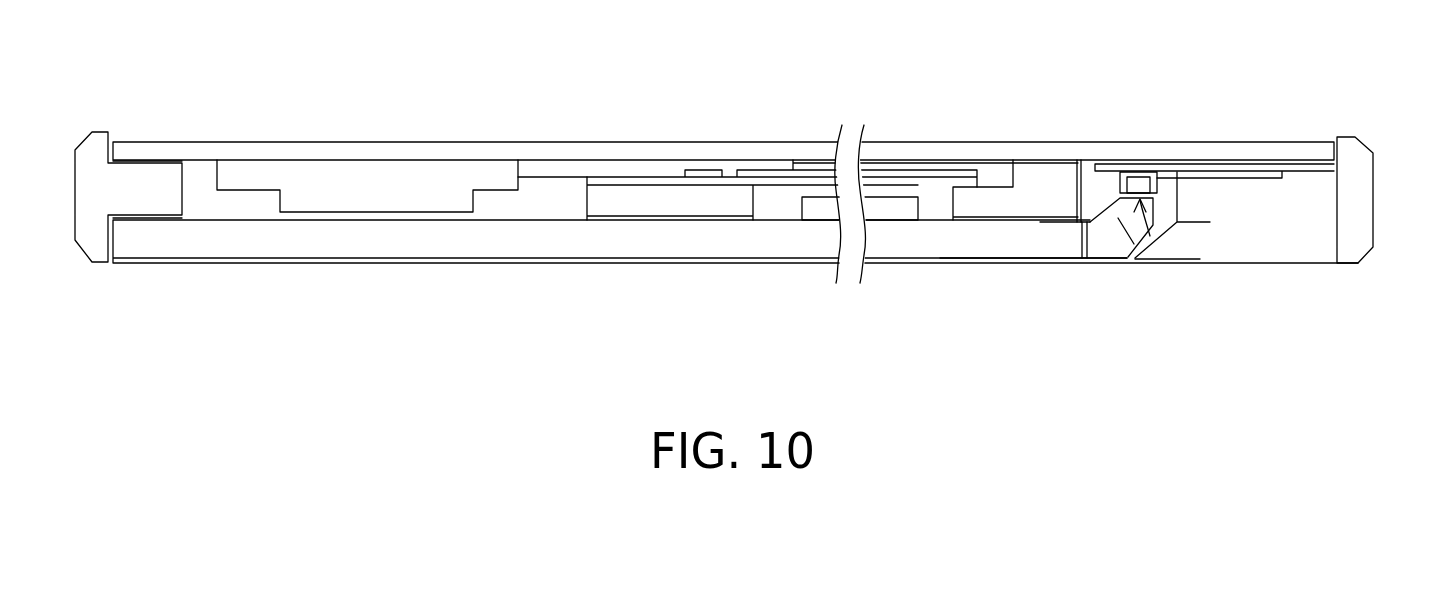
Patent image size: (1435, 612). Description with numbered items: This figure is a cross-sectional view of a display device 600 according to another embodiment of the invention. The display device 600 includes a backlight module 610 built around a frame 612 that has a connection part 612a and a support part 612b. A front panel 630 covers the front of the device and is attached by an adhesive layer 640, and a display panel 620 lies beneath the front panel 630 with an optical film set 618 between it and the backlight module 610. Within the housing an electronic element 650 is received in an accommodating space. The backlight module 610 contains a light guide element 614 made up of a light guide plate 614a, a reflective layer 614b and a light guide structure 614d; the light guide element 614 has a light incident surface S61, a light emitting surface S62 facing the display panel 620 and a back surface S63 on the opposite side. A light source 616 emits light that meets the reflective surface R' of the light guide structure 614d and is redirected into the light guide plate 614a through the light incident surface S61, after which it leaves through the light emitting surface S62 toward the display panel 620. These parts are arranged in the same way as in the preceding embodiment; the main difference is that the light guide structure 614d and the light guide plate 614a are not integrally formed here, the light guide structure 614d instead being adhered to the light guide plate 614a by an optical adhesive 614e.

The display device 600 is at (1374, 54).
The backlight module 610 is at (767, 292).
The frame 612 is at (1335, 247).
The connection part 612a is at (172, 187).
The support part 612b is at (685, 203).
The light guide element 614 is at (1210, 333).
The light guide plate 614a is at (1047, 240).
The reflective layer 614b is at (1005, 262).
The light guide structure 614d is at (1152, 248).
The optical adhesive 614e is at (1085, 243).
The light source 616 is at (1138, 182).
The optical film set 618 is at (820, 203).
The display panel 620 is at (867, 175).
The front panel 630 is at (684, 152).
The adhesive layer 640 is at (152, 216).
The electronic element 650 is at (398, 177).
The reflective surface R' is at (1111, 170).
The light incident surface S61 is at (1152, 226).
The light emitting surface S62 is at (897, 218).
The back surface S63 is at (887, 265).